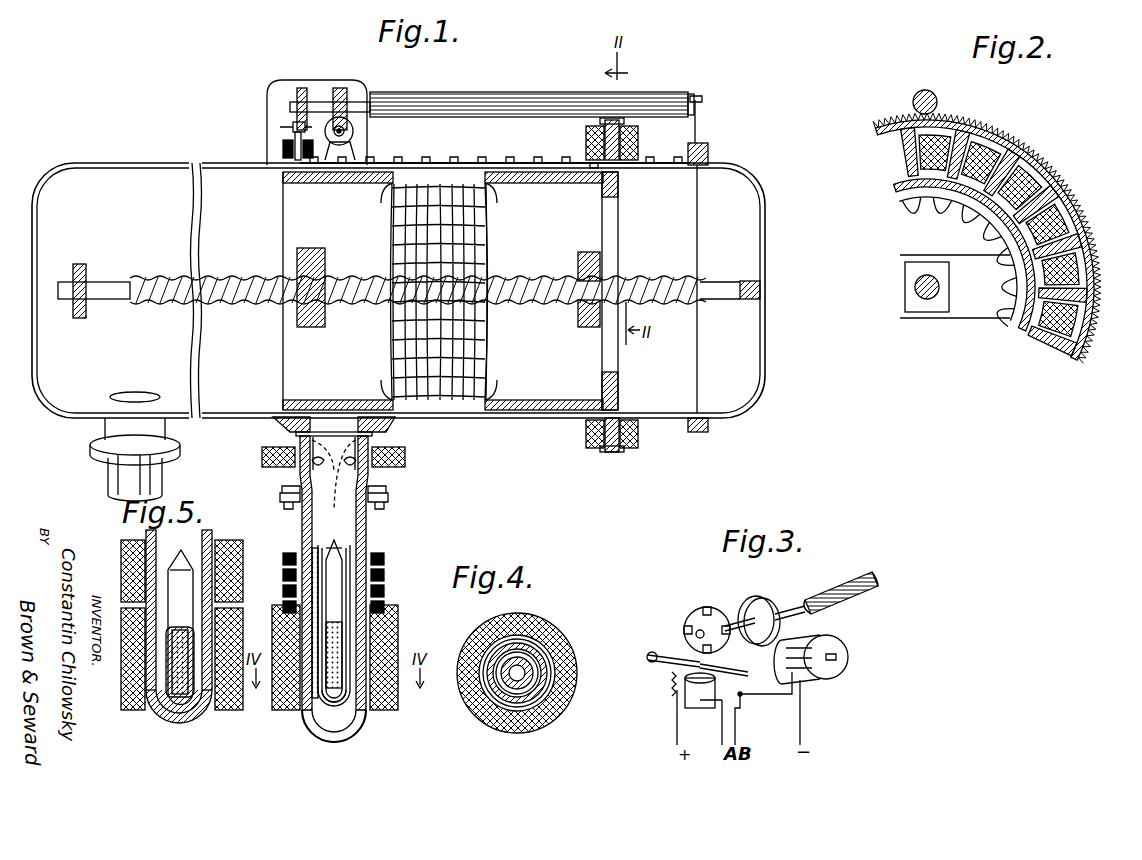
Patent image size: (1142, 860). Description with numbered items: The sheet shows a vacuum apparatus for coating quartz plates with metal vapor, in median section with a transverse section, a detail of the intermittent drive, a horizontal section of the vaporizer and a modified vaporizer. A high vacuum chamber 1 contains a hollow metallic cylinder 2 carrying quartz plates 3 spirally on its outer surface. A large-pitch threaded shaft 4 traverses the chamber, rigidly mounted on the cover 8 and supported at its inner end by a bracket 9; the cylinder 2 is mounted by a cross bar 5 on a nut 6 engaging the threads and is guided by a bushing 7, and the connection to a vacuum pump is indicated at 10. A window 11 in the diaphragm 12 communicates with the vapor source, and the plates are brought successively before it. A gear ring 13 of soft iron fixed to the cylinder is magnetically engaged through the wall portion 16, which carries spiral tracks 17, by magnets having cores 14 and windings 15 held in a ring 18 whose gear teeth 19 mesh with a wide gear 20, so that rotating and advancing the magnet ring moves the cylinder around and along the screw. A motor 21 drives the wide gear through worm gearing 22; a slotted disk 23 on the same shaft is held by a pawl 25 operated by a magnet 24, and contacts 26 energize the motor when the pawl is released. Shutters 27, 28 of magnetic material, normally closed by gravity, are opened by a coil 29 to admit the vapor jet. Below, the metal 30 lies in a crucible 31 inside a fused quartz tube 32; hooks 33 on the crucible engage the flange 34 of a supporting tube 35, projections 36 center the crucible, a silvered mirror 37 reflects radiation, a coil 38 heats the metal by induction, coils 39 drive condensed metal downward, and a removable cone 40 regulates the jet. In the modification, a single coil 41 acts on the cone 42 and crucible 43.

In FIG. 1, the high vacuum chamber 1 is at (112, 165).
In FIG. 1, the hollow metallic cylinder 2 is at (443, 291).
In FIG. 1, the quartz plates 3 is at (470, 262).
In FIG. 1, the shaft 4 is at (230, 282).
In FIG. 1, the cross bar 5 is at (584, 262).
In FIG. 2, the cross bar 5 is at (972, 312).
In FIG. 1, the nut 6 is at (586, 320).
In FIG. 2, the nut 6 is at (927, 300).
In FIG. 1, the bushing 7 is at (314, 250).
In FIG. 1, the cover 8 is at (744, 253).
In FIG. 1, the bracket 9 is at (78, 272).
In FIG. 1, the connection to a vacuum pump 10 is at (108, 486).
In FIG. 1, the window 11 is at (336, 430).
In FIG. 1, the diaphragm 12 is at (302, 417).
In FIG. 1, the gear ring 13 is at (618, 396).
In FIG. 2, the gear ring 13 is at (1020, 330).
In FIG. 1, the cores 14 is at (604, 142).
In FIG. 2, the cores 14 is at (962, 132).
In FIG. 1, the windings 15 is at (632, 140).
In FIG. 2, the windings 15 is at (990, 134).
In FIG. 1, the portion of the wall of the chamber 16 is at (505, 162).
In FIG. 1, the spiral tracks 17 is at (448, 162).
In FIG. 1, the ring 18 is at (630, 446).
In FIG. 2, the ring 18 is at (1006, 140).
In FIG. 1, the gear teeth 19 is at (609, 454).
In FIG. 2, the gear teeth 19 is at (1034, 152).
In FIG. 1, the wide gear 20 is at (508, 102).
In FIG. 2, the wide gear 20 is at (932, 96).
In FIG. 3, the wide gear 20 is at (841, 587).
In FIG. 1, the motor 21 is at (352, 132).
In FIG. 3, the motor 21 is at (830, 640).
In FIG. 1, the worm gearing 22 is at (343, 90).
In FIG. 3, the worm gearing 22 is at (764, 597).
In FIG. 1, the disk 23 is at (302, 88).
In FIG. 3, the disk 23 is at (704, 606).
In FIG. 1, the magnet 24 is at (285, 148).
In FIG. 3, the magnet 24 is at (736, 708).
In FIG. 1, the pawl 25 is at (292, 126).
In FIG. 3, the pawl 25 is at (672, 656).
In FIG. 3, the contacts 26 is at (742, 694).
In FIG. 1, the shutter 27 is at (290, 465).
In FIG. 1, the shutter 28 is at (385, 464).
In FIG. 1, the coil 29 is at (405, 460).
In FIG. 1, the metal 30 is at (330, 712).
In FIG. 4, the metal 30 is at (530, 669).
In FIG. 1, the crucible 31 is at (342, 714).
In FIG. 4, the crucible 31 is at (536, 676).
In FIG. 1, the fused quartz tube 32 is at (360, 708).
In FIG. 4, the fused quartz tube 32 is at (543, 655).
In FIG. 1, the hooks or flanges 33 is at (348, 550).
In FIG. 1, the inwardly projecting flange 34 is at (384, 566).
In FIG. 1, the supporting tube 35 is at (336, 523).
In FIG. 1, the projections 36 is at (314, 706).
In FIG. 1, the mirror 37 is at (352, 606).
In FIG. 4, the mirror 37 is at (517, 639).
In FIG. 1, the coil 38 is at (398, 626).
In FIG. 4, the coil 38 is at (518, 733).
In FIG. 1, the coils 39 is at (283, 590).
In FIG. 1, the removable metal cone 40 is at (300, 540).
In FIG. 5, the single coil 41 is at (121, 588).
In FIG. 5, the cone 42 is at (182, 552).
In FIG. 5, the crucible 43 is at (180, 612).